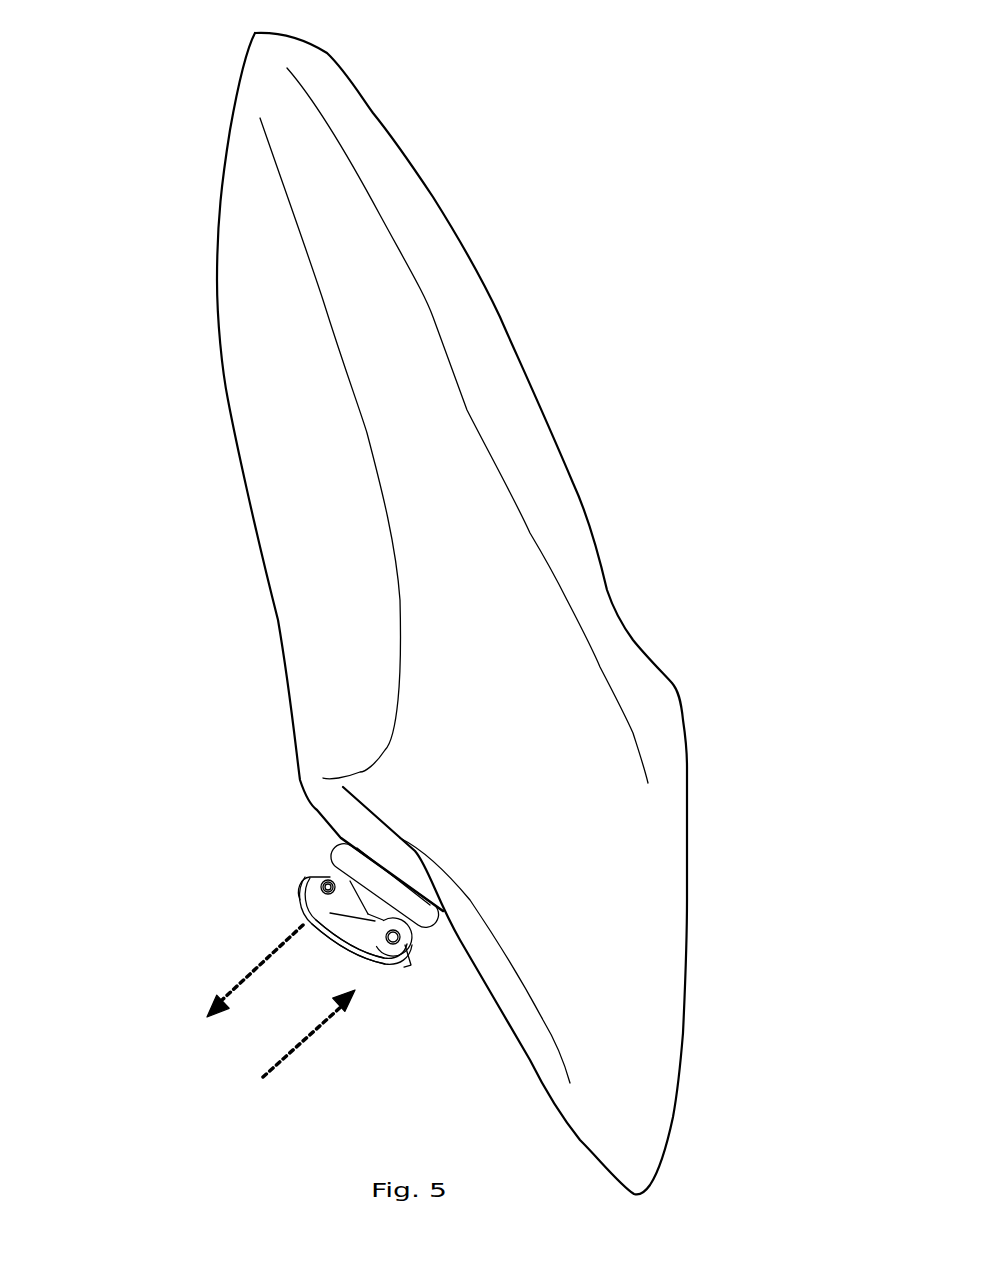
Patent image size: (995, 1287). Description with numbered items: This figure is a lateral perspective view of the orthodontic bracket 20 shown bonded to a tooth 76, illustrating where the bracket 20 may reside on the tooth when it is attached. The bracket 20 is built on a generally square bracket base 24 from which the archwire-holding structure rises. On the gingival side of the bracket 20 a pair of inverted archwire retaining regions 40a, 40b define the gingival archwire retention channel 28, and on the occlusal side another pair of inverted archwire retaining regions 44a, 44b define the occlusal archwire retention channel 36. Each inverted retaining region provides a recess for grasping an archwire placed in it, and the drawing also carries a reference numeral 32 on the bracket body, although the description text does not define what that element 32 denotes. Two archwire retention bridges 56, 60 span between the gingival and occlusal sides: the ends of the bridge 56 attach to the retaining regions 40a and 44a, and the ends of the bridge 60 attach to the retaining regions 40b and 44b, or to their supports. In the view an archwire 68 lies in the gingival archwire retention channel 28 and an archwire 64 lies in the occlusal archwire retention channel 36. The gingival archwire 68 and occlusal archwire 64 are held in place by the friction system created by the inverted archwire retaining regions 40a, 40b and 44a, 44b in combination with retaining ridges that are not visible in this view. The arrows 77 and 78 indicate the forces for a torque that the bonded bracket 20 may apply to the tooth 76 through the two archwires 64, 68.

The bracket 20 is at (443, 938).
The bracket base 24 is at (432, 915).
The gingival archwire retention channel 28 is at (327, 885).
The connecting member 32 is at (367, 913).
The occlusal archwire retention channel 36 is at (392, 952).
The inverted archwire retaining region 40a is at (303, 875).
The inverted archwire retaining region 40b is at (303, 900).
The inverted archwire retaining region 44a is at (357, 963).
The inverted archwire retaining region 44b is at (383, 970).
The archwire retention bridge 56 is at (343, 950).
The archwire retention bridge 60 is at (343, 927).
The archwire 64 is at (396, 940).
The archwire 68 is at (342, 878).
The tooth 76 is at (418, 207).
The arrow 77 is at (204, 1007).
The arrow 78 is at (250, 1078).